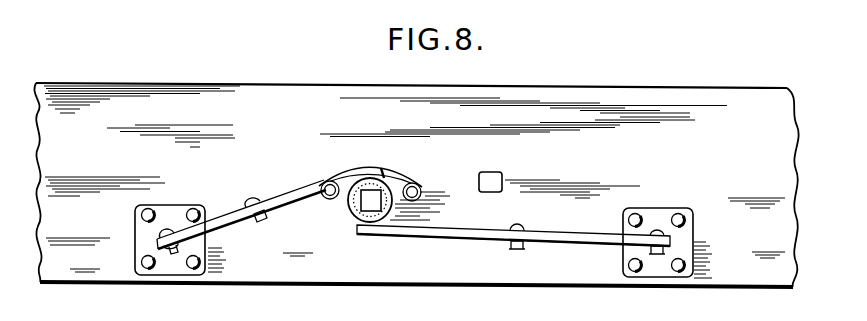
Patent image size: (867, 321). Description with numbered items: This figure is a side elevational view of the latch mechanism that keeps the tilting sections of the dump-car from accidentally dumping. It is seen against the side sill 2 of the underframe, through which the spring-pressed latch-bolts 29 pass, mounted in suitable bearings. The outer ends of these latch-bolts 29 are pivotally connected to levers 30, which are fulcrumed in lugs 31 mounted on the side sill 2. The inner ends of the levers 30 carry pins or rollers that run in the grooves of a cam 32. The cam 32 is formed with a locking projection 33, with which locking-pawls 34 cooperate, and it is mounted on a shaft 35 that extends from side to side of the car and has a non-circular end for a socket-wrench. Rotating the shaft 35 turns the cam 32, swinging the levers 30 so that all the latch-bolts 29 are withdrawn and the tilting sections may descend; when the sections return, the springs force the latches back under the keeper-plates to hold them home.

The side sill 2 is at (416, 185).
The latch-bolt 29 is at (160, 238).
The lever 30 is at (279, 192).
The lug 31 is at (258, 221).
The cam 32 is at (354, 212).
The locking projection 33 is at (383, 172).
The locking-pawl 34 is at (312, 206).
The shaft 35 is at (365, 213).